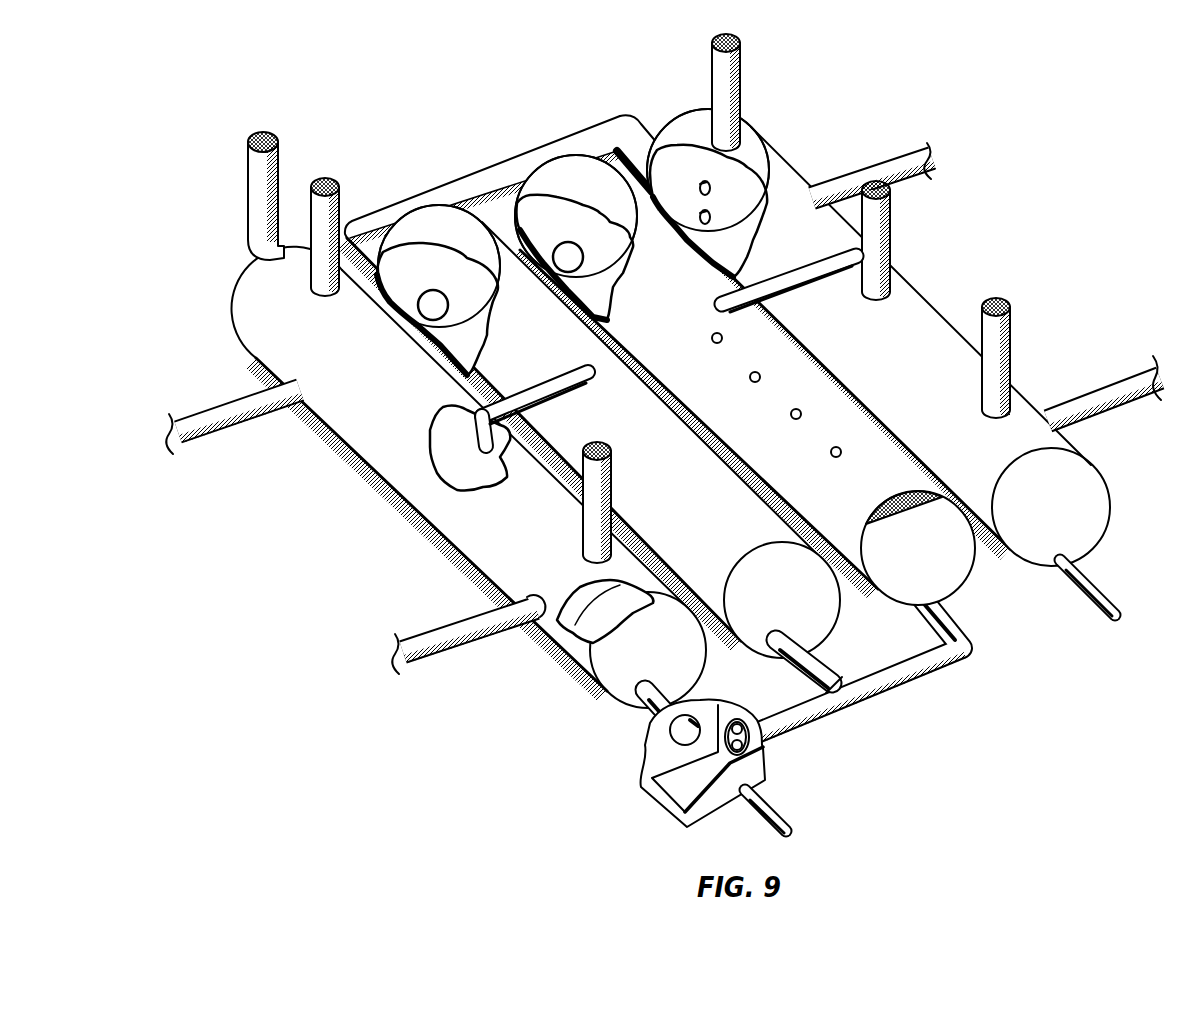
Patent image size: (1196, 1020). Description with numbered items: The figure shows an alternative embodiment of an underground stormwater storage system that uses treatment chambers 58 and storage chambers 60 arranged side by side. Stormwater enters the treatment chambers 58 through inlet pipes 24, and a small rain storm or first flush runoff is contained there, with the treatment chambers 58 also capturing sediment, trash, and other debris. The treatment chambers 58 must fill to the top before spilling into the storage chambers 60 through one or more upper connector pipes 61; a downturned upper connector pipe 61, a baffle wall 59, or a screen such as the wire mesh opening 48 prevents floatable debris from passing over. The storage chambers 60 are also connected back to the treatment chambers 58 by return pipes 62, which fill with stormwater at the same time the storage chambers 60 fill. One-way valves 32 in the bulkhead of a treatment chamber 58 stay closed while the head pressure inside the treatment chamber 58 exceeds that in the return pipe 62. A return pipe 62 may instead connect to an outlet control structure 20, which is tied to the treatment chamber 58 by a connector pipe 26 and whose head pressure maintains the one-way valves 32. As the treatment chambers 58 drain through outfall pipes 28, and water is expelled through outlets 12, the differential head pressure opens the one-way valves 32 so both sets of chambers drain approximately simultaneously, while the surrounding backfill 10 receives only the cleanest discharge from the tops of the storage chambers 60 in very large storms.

The backfill 10 is at (995, 565).
The outlets 12 is at (722, 339).
The outlet control structure 20 is at (677, 792).
The inlet pipes 24 is at (713, 77).
The connector pipe 26 is at (653, 698).
The outfall pipes 28 is at (1097, 585).
The one-way valves 32 is at (712, 216).
The opening 48 is at (900, 503).
The treatment chambers 58 is at (465, 505).
The baffle wall 59 is at (550, 640).
The storage chambers 60 is at (720, 497).
The upper connector pipes 61 is at (427, 443).
The return pipes 62 is at (487, 177).